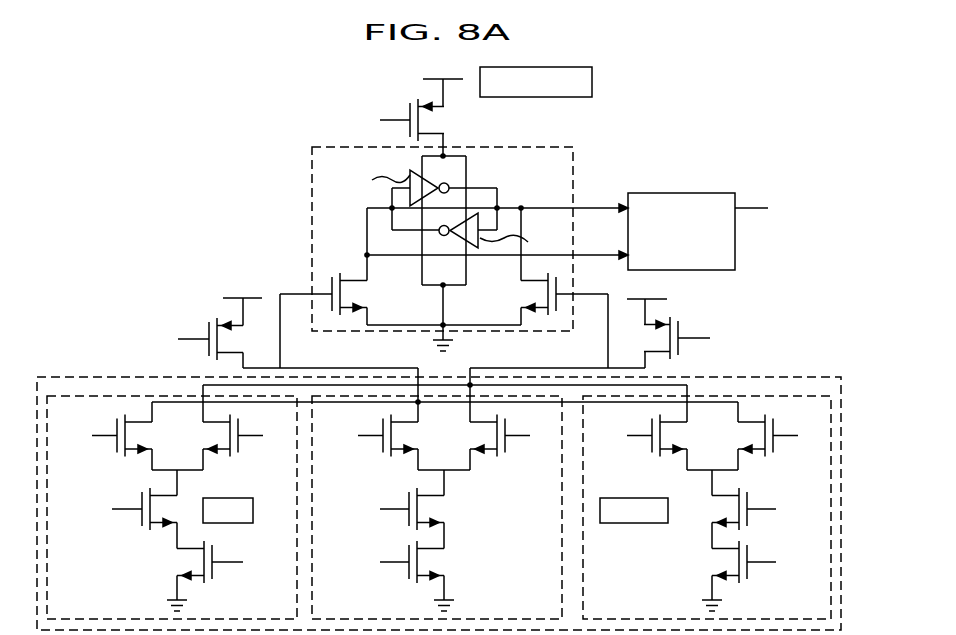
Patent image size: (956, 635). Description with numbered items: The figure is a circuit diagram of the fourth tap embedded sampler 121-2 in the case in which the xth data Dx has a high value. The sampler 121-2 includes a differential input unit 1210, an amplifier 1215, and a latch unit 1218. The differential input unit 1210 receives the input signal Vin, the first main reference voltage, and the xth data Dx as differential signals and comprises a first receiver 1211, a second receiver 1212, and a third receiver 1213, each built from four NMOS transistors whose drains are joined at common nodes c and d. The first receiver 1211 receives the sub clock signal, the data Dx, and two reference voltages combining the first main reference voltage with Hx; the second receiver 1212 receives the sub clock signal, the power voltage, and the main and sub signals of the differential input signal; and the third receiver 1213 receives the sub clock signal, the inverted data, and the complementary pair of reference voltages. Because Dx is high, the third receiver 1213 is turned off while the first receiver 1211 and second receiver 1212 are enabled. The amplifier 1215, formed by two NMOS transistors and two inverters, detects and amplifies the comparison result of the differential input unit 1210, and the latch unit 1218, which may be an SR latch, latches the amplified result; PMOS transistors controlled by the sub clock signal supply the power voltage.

The fourth tap embedded sampler 121-2 is at (153, 99).
The differential input unit 1210 is at (70, 377).
The first receiver 1211 is at (47, 600).
The second receiver 1212 is at (312, 600).
The third receiver 1213 is at (583, 600).
The amplifier 1215 is at (312, 207).
The latch unit 1218 is at (680, 193).